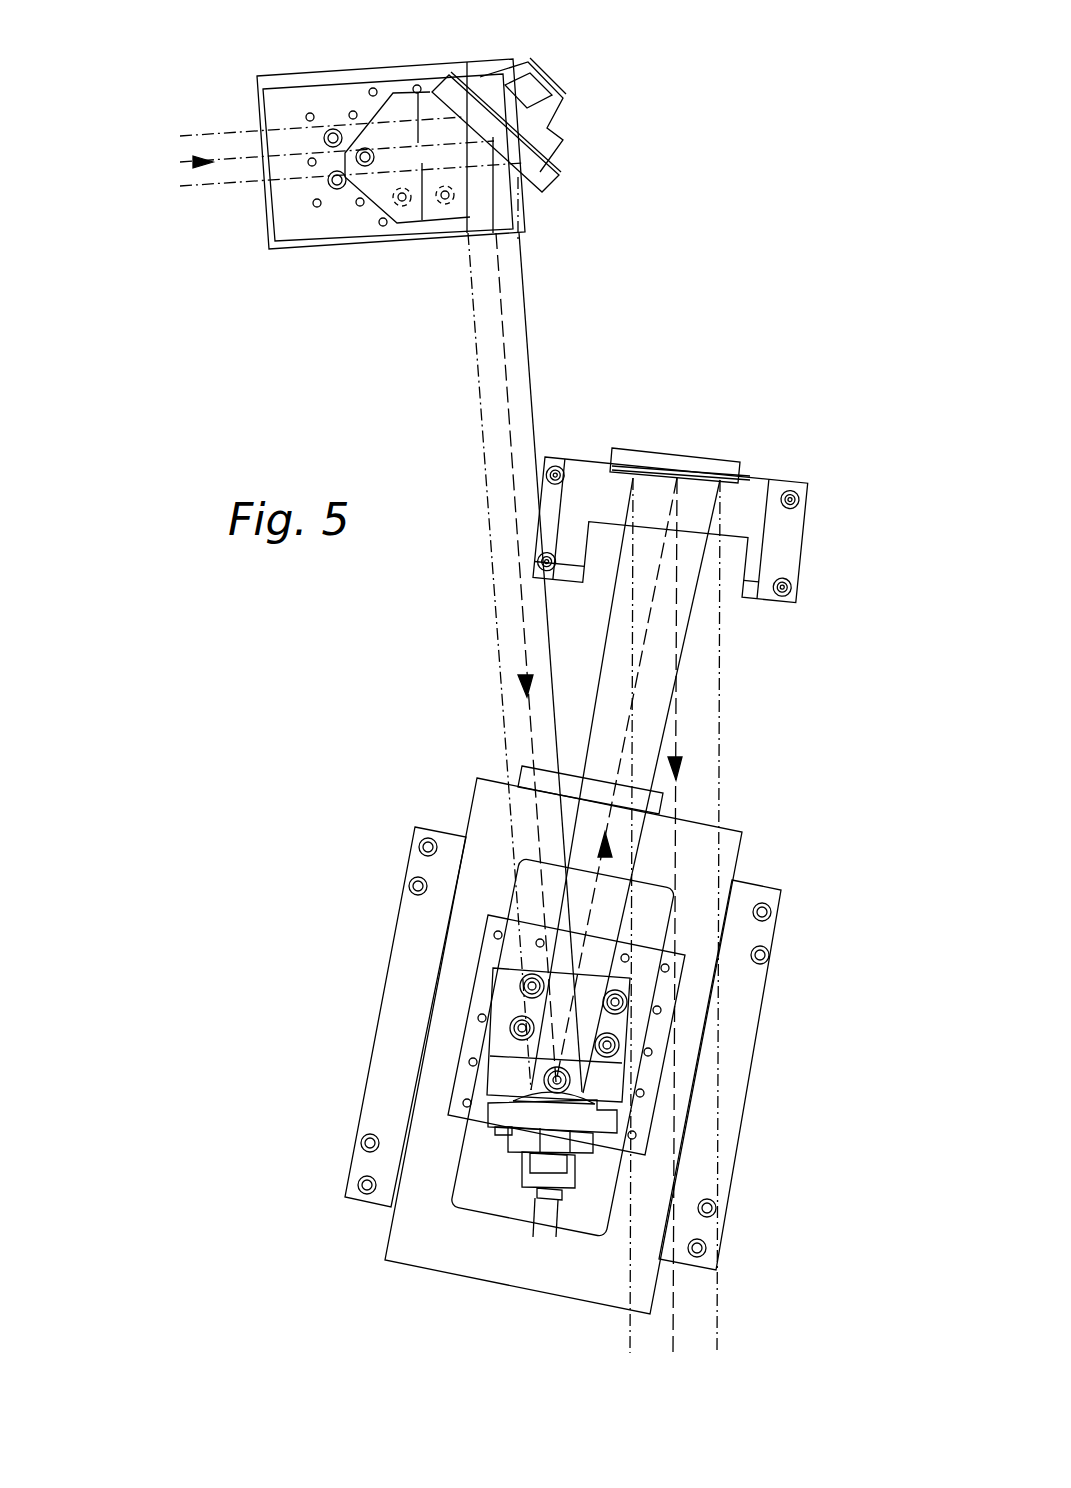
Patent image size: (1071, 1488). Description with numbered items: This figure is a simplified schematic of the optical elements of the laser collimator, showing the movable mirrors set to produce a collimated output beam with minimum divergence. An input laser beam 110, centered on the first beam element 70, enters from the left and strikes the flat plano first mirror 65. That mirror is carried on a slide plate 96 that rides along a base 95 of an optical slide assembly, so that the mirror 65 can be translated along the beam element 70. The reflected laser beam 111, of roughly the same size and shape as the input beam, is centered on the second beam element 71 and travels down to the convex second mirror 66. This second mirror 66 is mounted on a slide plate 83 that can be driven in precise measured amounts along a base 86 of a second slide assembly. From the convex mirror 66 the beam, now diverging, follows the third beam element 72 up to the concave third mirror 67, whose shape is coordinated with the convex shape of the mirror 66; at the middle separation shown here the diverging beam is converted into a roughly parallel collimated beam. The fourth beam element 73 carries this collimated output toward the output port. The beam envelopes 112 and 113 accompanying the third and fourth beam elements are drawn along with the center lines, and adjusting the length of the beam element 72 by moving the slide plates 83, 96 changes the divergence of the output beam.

The first mirror 65 is at (465, 105).
The second mirror 66 is at (551, 1088).
The third mirror 67 is at (720, 452).
The first beam element 70 is at (217, 163).
The second beam element 71 is at (508, 397).
The third beam element 72 is at (645, 650).
The fourth beam element 73 is at (677, 807).
The slide plate 83 is at (463, 1086).
The base 86 is at (428, 1130).
The base 95 is at (312, 80).
The slide plate 96 is at (330, 218).
The input laser beam 110 is at (180, 187).
The reflected laser beam 111 is at (520, 247).
The optical axis of returning beam 112 is at (692, 612).
The optical axis of outgoing beam 113 is at (720, 750).